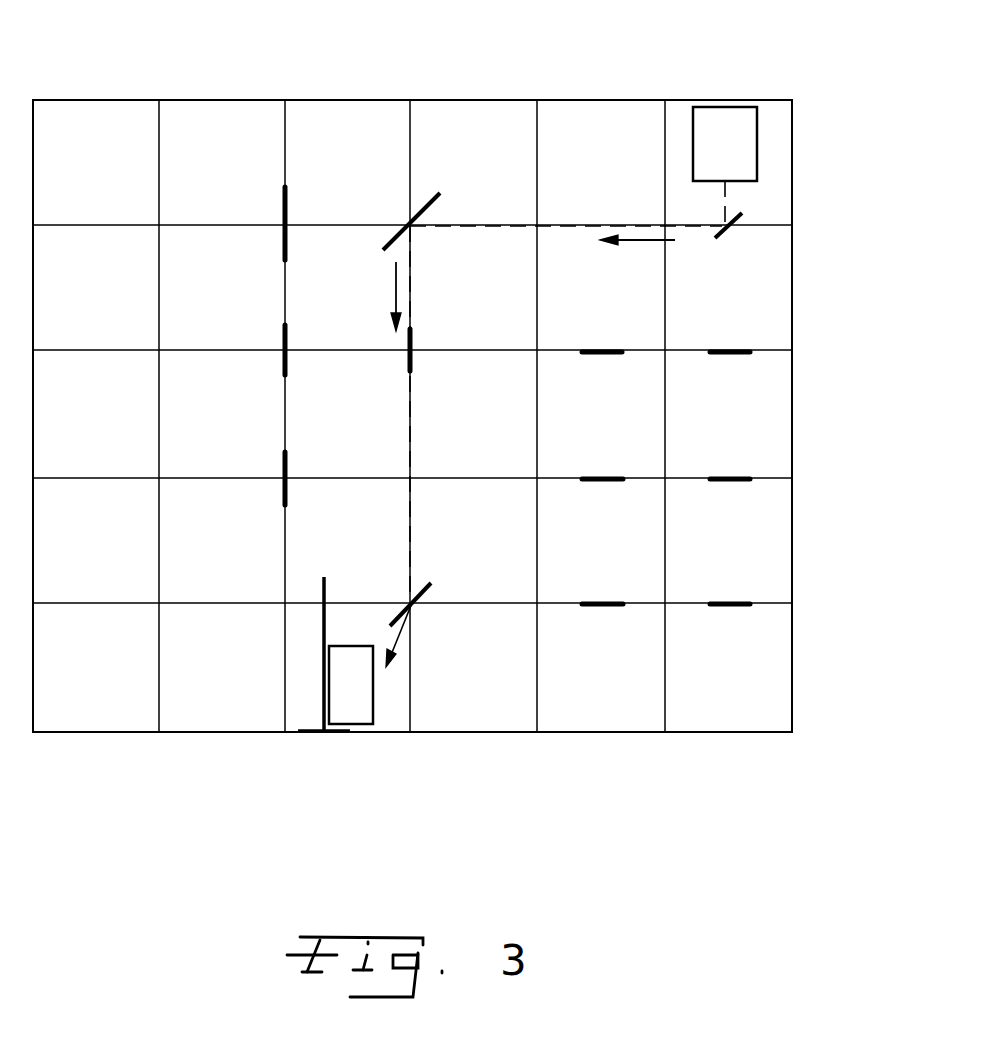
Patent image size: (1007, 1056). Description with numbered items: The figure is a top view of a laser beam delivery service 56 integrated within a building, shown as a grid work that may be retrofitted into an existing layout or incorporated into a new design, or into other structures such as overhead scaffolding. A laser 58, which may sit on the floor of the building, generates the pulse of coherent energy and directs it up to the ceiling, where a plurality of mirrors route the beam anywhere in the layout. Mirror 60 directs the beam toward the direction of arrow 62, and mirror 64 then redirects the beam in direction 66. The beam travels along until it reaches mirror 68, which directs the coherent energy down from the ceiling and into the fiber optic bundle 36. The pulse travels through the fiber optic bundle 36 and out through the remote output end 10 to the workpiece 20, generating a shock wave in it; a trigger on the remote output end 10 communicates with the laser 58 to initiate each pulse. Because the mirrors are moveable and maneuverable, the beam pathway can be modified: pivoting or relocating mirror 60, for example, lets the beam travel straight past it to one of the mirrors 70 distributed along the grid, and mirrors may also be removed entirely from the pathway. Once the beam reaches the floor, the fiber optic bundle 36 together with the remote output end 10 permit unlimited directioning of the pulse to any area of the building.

The remote output end 10 is at (356, 711).
The workpiece 20 is at (322, 665).
The fiber optic bundle 36 is at (392, 662).
The laser beam delivery service 56 is at (197, 99).
The laser 58 is at (725, 117).
The mirror 60 is at (728, 232).
The arrow 62 is at (640, 243).
The mirror 64 is at (390, 235).
The direction 66 is at (391, 303).
The mirror 68 is at (418, 606).
The mirror 70 is at (282, 362).